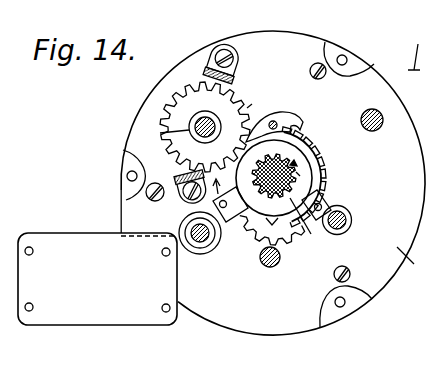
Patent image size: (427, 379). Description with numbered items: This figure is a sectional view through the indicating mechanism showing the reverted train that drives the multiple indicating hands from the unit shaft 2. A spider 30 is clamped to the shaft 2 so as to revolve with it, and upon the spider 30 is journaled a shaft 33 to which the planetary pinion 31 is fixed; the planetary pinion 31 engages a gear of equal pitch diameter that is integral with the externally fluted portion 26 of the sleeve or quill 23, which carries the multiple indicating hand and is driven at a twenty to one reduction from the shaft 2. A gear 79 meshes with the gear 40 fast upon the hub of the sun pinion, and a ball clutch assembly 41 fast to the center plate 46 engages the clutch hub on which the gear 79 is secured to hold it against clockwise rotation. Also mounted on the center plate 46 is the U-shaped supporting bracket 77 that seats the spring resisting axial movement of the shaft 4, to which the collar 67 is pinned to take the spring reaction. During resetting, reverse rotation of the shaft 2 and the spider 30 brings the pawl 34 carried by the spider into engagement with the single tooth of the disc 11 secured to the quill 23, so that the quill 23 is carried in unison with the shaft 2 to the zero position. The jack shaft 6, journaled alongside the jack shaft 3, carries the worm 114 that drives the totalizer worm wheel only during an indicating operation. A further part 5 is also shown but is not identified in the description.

The shaft 2 is at (300, 176).
The jack shaft 3 is at (270, 267).
The shaft 4 is at (209, 138).
The pivot stud 5 is at (351, 220).
The jack shaft 6 is at (204, 244).
The disc 11 is at (308, 222).
The quill 23 is at (297, 172).
The externally fluted portion 26 is at (294, 162).
The spider 30 is at (326, 200).
The planetary pinion 31 is at (374, 131).
The shaft 33 is at (283, 238).
The pawl 34 is at (284, 115).
The gear 40 is at (300, 166).
The ball clutch assembly 41 is at (247, 108).
The center plate 46 is at (412, 261).
The collar 67 is at (160, 127).
The U-shaped supporting bracket 77 is at (210, 76).
The gear 79 is at (228, 113).
The worm 114 is at (170, 255).